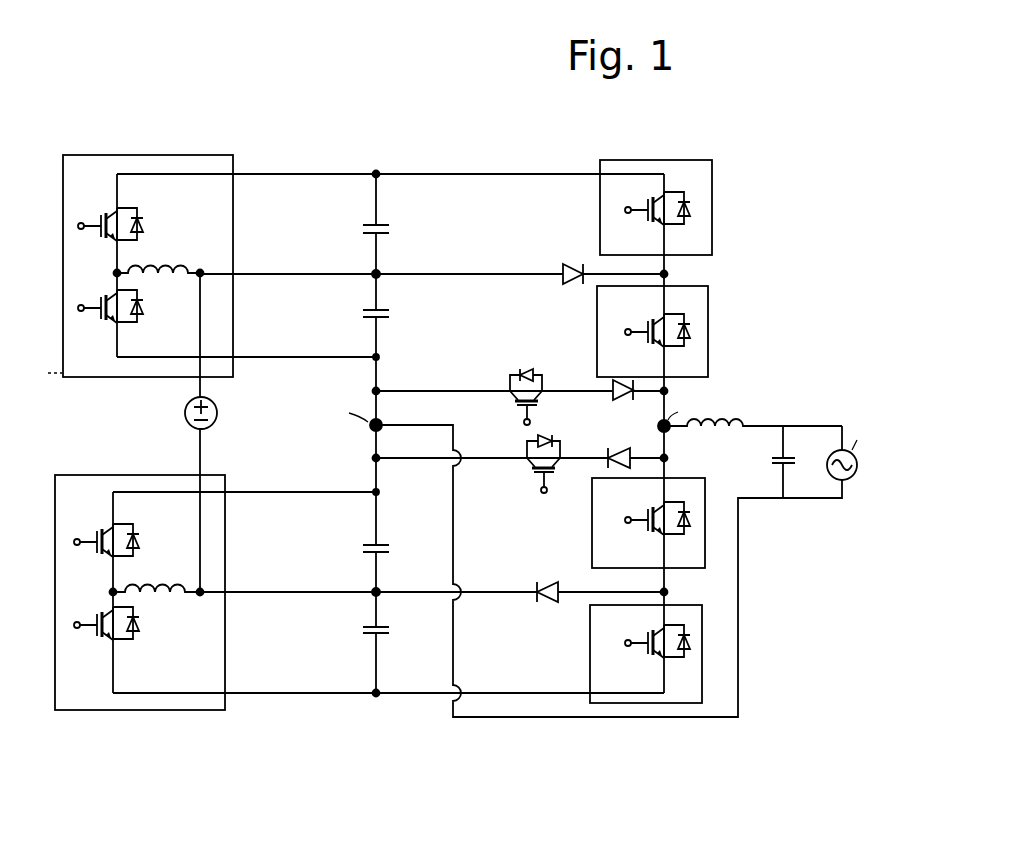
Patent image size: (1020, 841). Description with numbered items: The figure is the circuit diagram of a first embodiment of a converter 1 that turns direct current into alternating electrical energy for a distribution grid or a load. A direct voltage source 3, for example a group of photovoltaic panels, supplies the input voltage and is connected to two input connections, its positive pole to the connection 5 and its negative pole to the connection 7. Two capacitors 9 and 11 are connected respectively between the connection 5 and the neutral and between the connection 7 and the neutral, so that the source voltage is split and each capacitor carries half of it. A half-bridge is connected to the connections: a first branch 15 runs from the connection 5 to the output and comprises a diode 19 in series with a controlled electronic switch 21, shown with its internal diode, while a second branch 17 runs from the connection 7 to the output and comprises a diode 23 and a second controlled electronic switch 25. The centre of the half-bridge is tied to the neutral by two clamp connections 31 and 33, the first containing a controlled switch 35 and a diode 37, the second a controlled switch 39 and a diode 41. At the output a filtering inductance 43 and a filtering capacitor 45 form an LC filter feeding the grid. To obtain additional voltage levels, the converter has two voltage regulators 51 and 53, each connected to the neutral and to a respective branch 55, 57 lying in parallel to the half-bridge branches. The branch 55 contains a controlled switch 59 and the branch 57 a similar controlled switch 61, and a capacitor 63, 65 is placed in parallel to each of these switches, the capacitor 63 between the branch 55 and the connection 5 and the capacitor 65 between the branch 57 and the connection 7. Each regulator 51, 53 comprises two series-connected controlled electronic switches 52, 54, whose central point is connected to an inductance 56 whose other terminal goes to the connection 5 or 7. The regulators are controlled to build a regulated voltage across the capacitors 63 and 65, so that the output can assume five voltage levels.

The converter 1 is at (766, 290).
The direct voltage source 3 is at (218, 413).
The input connection 5 is at (380, 273).
The input connection 7 is at (378, 590).
The capacitor 9 is at (367, 318).
The capacitor 11 is at (362, 543).
The first branch 15 is at (475, 273).
The second branch 17 is at (491, 590).
The diode 19 is at (570, 265).
The controlled electronic switch 21 is at (713, 368).
The diode 23 is at (547, 582).
The second controlled electronic switch 25 is at (709, 512).
The clamp connection 31 is at (425, 389).
The clamp connection 33 is at (477, 461).
The controlled electronic switch 35 is at (548, 371).
The diode 37 is at (624, 400).
The controlled electronic switch 39 is at (526, 444).
The diode 41 is at (611, 452).
The filtering inductance 43 is at (714, 420).
The filtering capacitor 45 is at (771, 457).
The voltage regulator 51 is at (241, 154).
The controlled electronic switch 52 is at (151, 217).
The voltage regulator 53 is at (208, 719).
The controlled electronic switch 54 is at (149, 310).
The branch 55 is at (453, 173).
The inductance 56 is at (160, 263).
The branch 57 is at (489, 687).
The controlled switch 59 is at (718, 189).
The controlled switch 61 is at (706, 626).
The capacitor 63 is at (368, 225).
The capacitor 65 is at (365, 635).